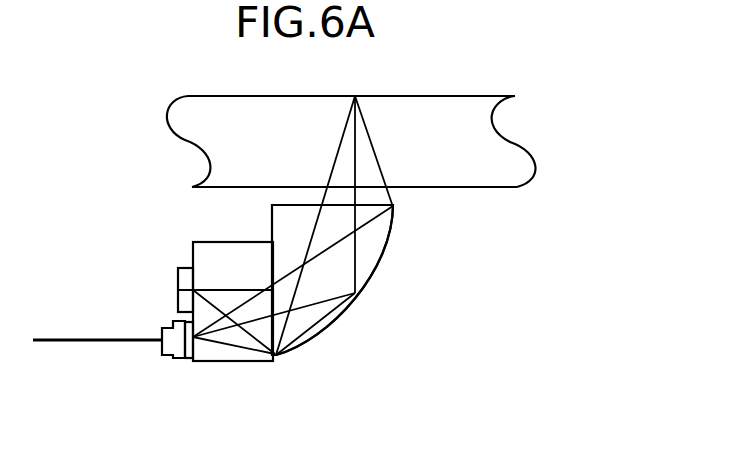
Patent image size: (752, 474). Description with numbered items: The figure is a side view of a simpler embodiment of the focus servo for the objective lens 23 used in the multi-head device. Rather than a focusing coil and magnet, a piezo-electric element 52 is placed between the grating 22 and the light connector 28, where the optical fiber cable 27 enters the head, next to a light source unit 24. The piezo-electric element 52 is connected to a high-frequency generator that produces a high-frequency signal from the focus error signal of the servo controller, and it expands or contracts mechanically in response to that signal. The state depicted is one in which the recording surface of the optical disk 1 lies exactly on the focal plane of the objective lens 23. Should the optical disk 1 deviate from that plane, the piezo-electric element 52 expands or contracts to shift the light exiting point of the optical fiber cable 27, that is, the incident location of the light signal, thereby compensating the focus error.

The optical disk 1 is at (517, 163).
The grating 22 is at (242, 362).
The objective lens 23 is at (337, 274).
The light source unit 24 is at (178, 278).
The optical fiber cable 27 is at (82, 343).
The light connector 28 is at (167, 356).
The piezo-electric element 52 is at (190, 359).